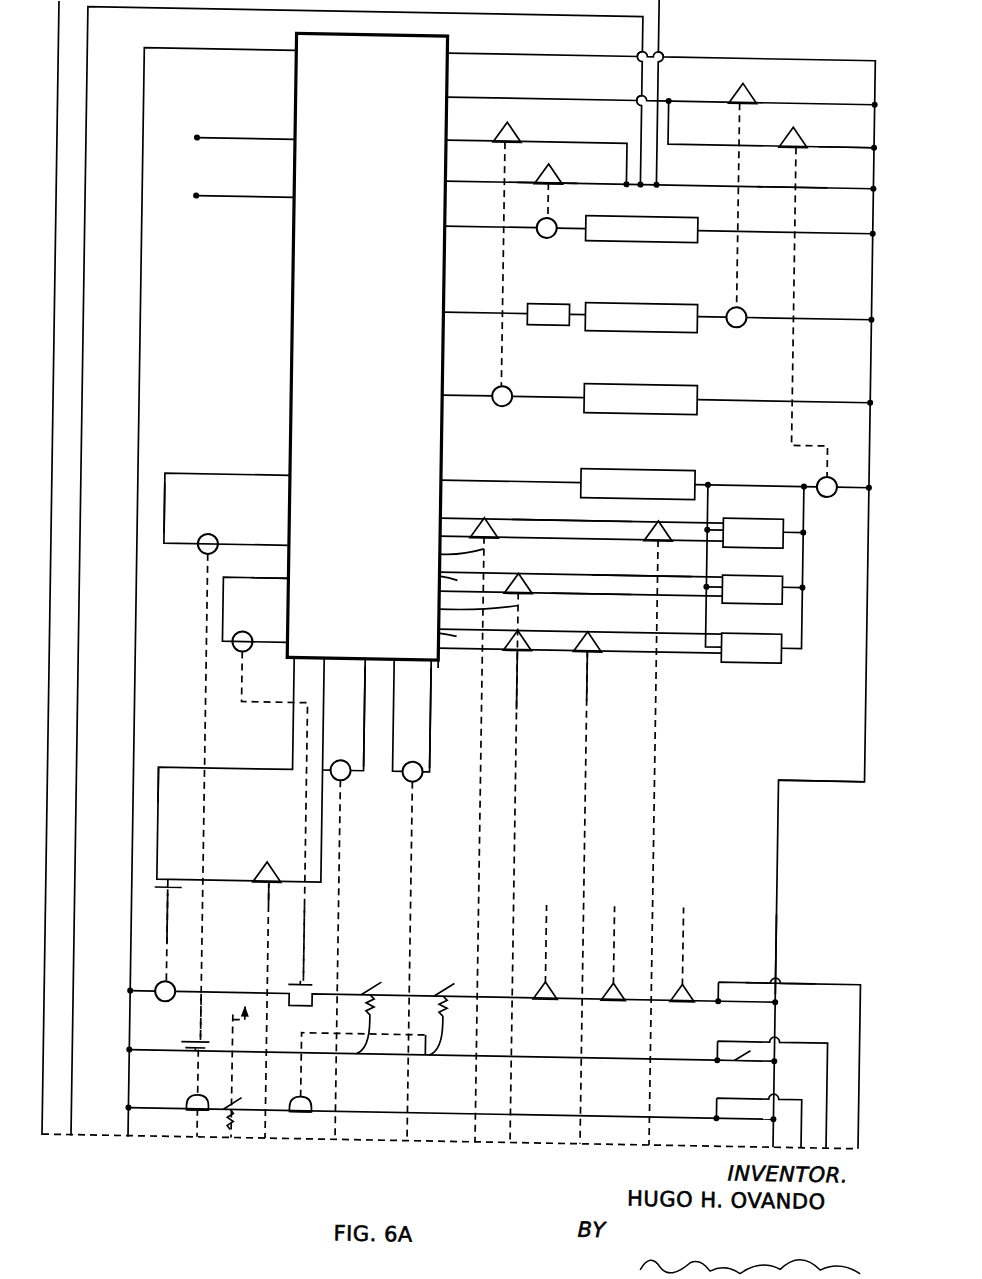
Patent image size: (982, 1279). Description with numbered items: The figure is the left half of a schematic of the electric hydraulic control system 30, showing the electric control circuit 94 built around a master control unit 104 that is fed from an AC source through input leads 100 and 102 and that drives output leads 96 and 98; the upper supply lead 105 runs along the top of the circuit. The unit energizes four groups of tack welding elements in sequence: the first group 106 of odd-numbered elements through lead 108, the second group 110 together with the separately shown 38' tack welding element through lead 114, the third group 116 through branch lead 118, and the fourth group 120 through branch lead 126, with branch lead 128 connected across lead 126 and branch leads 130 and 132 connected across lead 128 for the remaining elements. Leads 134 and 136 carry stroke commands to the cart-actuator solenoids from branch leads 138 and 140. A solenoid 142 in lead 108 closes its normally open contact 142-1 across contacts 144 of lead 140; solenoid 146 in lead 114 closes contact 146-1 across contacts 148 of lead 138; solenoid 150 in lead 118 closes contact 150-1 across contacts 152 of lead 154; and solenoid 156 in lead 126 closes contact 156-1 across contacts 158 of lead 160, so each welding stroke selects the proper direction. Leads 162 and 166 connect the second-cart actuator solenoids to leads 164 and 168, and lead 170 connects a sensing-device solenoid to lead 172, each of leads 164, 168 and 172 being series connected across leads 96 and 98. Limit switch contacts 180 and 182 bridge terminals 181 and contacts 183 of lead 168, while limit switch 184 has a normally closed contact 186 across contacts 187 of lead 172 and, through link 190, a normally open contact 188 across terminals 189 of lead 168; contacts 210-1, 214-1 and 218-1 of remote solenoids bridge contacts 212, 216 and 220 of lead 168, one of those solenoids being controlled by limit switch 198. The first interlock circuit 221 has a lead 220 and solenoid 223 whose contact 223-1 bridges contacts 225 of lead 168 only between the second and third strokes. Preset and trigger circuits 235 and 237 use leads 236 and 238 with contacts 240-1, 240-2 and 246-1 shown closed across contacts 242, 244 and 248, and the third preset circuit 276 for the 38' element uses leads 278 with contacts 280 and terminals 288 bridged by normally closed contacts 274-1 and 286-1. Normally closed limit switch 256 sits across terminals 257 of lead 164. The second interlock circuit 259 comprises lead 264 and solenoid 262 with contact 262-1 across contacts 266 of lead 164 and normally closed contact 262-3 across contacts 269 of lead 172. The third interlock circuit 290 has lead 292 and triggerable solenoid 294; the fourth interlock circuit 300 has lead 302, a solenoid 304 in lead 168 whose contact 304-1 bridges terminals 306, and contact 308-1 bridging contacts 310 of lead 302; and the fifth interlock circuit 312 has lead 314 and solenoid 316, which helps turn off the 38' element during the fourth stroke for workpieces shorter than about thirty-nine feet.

The control system 30 is at (809, 778).
The tack welding element 38' is at (514, 296).
The electric control circuit 94 is at (50, 513).
The output lead 96 is at (144, 632).
The output lead 98 is at (792, 928).
The input lead 100 is at (216, 134).
The input lead 102 is at (217, 198).
The master control unit 104 is at (367, 346).
The supply line 105 is at (800, 45).
The first group of tack welding elements 106 is at (660, 205).
The lead 108 is at (856, 196).
The second group of tack welding elements 110 is at (630, 292).
The lead 114 is at (830, 304).
The third group of tack welding elements 116 is at (644, 373).
The branch lead 118 is at (845, 387).
The fourth group of tack welding elements 120 is at (628, 457).
The branch lead 126 is at (846, 470).
The branch lead 128 is at (811, 616).
The branch lead 130 is at (811, 518).
The branch lead 132 is at (811, 573).
The lead 134 is at (661, 18).
The lead 136 is at (524, 7).
The branch lead 138 is at (818, 89).
The branch lead 140 is at (790, 173).
The solenoid 142 is at (552, 229).
The normally open solenoid contact 142-1 is at (556, 180).
The spaced contacts 144 is at (553, 160).
The solenoid 146 is at (743, 294).
The normally open contact 146-1 is at (741, 96).
The spaced bridging contacts 148 is at (744, 72).
The solenoid 150 is at (515, 380).
The normally open contact 150-1 is at (660, 174).
The spaced bridging contacts 152 is at (509, 114).
The lead 154 is at (548, 132).
The solenoid 156 is at (826, 466).
The normally open contacts 156-1 is at (800, 140).
The bridging contacts 158 is at (795, 120).
The lead 160 is at (822, 132).
The lead 162 is at (797, 1025).
The lead 164 is at (730, 1040).
The lead 166 is at (842, 968).
The lead 168 is at (792, 978).
The lead 170 is at (796, 1088).
The lead 172 is at (738, 1108).
The normally open limit switch contact 180 is at (255, 1112).
The spaced terminals 181 is at (247, 1128).
The normally open limit switch contact 182 is at (393, 978).
The spaced contacts 183 is at (380, 1030).
The limit switch 184 is at (316, 1064).
The normally closed contact 186 is at (327, 1102).
The spaced contacts 187 is at (320, 1115).
The normally open contact 188 is at (456, 1012).
The bridgeable terminals 189 is at (466, 979).
The link 190 is at (440, 1050).
The limit switch 198 is at (259, 986).
The normally open contact 210-1 is at (562, 968).
The spaced contacts 212 is at (567, 961).
The normally open contact 214-1 is at (630, 968).
The spaced contacts 216 is at (628, 984).
The normally open contact 218-1 is at (701, 984).
The lead 220 is at (292, 577).
The first interlock circuit 221 is at (262, 573).
The solenoid 223 is at (248, 627).
The normally open contact 223-1 is at (319, 972).
The spaced bridging contacts 225 is at (327, 979).
The preset and trigger circuit 235 is at (448, 564).
The leads 236 is at (582, 583).
The preset and trigger circuit 237 is at (448, 621).
The leads 238 is at (695, 642).
The normally open contact 240-1 is at (448, 592).
The normally open contact 240-2 is at (527, 648).
The spaced contacts 242 is at (524, 570).
The spaced contacts 244 is at (527, 622).
The normally open solenoid contact 246-1 is at (597, 646).
The spaced contacts 248 is at (597, 622).
The normally closed limit switch 256 is at (770, 1043).
The spaced terminals 257 is at (755, 1050).
The second interlock circuit 259 is at (229, 470).
The solenoid 262 is at (218, 530).
The normally open contact 262-1 is at (212, 1036).
The normally closed contact 262-3 is at (218, 1115).
The lead 264 is at (175, 510).
The spaced contacts 266 is at (208, 1046).
The spaced contacts 269 is at (206, 1112).
The normally closed solenoid contact 274-1 is at (656, 584).
The third preset and trigger circuit 276 is at (458, 510).
The leads 278 is at (582, 512).
The spaced bridgeable contacts 280 is at (666, 511).
The normally closed contact 286-1 is at (448, 543).
The spaced terminals 288 is at (490, 509).
The third interlock circuit 290 is at (375, 728).
The lead 292 is at (343, 767).
The selectively triggerable solenoid 294 is at (352, 776).
The fourth interlock circuit 300 is at (190, 764).
The lead 302 is at (227, 764).
The solenoid 304 is at (172, 982).
The normally open contact 304-1 is at (184, 893).
The spaced terminals 306 is at (176, 878).
The normally open contact 308-1 is at (281, 882).
The bridgeable contacts 310 is at (280, 863).
The fifth interlock circuit 312 is at (444, 737).
The lead 314 is at (443, 666).
The solenoid 316 is at (430, 774).